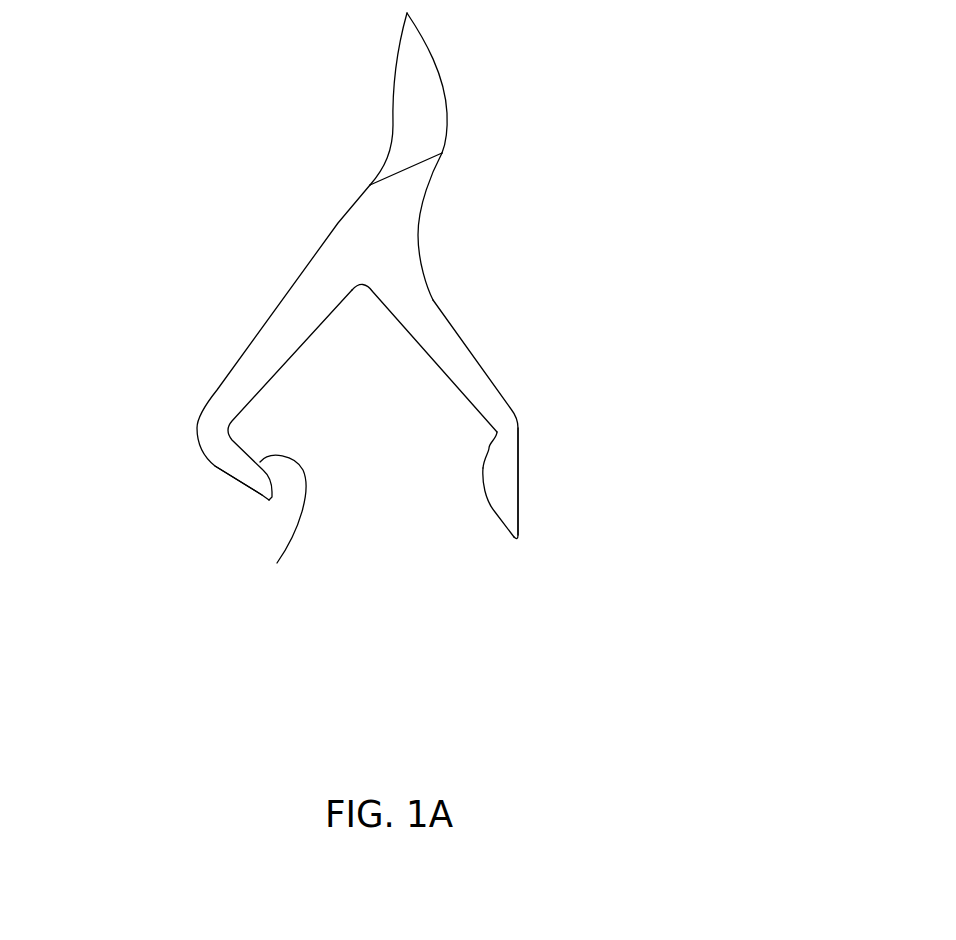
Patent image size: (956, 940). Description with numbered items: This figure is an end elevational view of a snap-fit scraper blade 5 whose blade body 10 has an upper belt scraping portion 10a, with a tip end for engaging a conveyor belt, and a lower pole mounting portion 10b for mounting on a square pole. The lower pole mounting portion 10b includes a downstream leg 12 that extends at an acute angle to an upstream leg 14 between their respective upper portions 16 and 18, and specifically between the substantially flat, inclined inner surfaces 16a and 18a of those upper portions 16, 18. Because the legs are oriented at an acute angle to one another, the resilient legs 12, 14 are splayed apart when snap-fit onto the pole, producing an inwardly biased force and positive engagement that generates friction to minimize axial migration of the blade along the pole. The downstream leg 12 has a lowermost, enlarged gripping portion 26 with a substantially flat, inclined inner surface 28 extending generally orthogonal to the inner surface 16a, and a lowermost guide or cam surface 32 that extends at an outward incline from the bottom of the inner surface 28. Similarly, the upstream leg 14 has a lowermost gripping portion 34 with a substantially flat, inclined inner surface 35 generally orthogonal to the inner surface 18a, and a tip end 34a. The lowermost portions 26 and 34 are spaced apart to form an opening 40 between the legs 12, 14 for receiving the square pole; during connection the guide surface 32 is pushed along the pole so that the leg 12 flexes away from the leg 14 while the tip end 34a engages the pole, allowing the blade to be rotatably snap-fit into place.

The scraper blade 5 is at (317, 138).
The blade body 10 is at (410, 198).
The upper belt scraping portion 10a is at (455, 78).
The lower pole mounting portion 10b is at (455, 267).
The downstream leg 12 is at (550, 393).
The upstream leg 14 is at (232, 350).
The upper portion of downstream leg 16 is at (437, 313).
The inner surface of downstream leg upper portion 16a is at (423, 340).
The upper portion of upstream leg 18 is at (263, 337).
The inner surface of upstream leg upper portion 18a is at (262, 390).
The enlarged gripping portion 26 is at (512, 477).
The inner surface of gripping portion 28 is at (487, 457).
The guide or cam surface 32 is at (495, 512).
The lowermost gripping portion 34 is at (227, 475).
The tip end 34a is at (272, 500).
The inner surface of upstream gripping portion 35 is at (283, 529).
The opening 40 is at (360, 533).